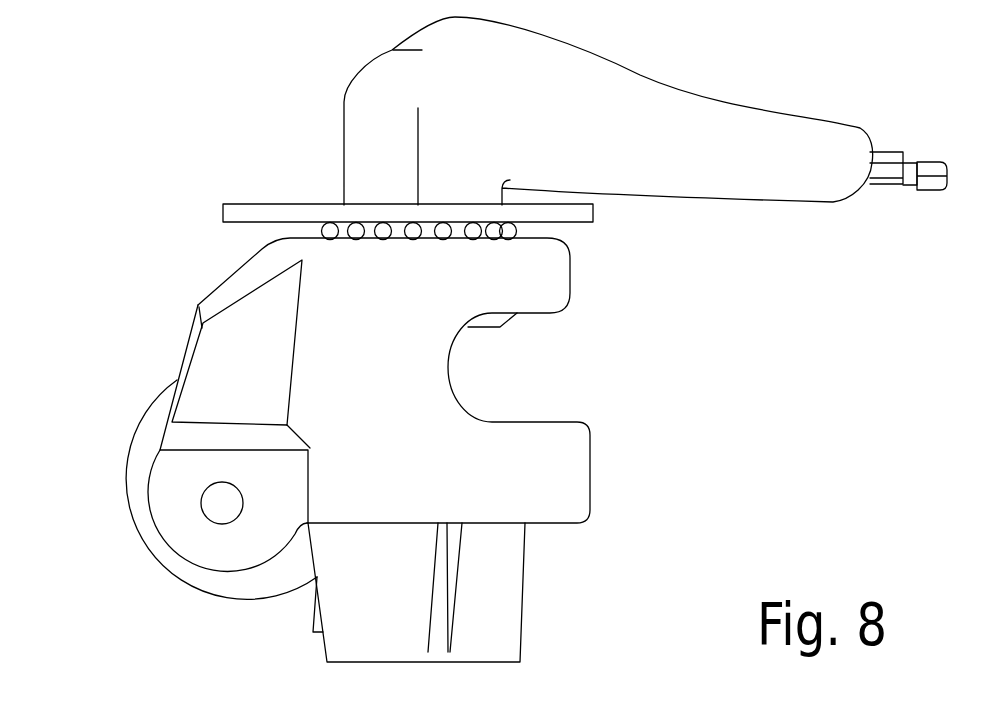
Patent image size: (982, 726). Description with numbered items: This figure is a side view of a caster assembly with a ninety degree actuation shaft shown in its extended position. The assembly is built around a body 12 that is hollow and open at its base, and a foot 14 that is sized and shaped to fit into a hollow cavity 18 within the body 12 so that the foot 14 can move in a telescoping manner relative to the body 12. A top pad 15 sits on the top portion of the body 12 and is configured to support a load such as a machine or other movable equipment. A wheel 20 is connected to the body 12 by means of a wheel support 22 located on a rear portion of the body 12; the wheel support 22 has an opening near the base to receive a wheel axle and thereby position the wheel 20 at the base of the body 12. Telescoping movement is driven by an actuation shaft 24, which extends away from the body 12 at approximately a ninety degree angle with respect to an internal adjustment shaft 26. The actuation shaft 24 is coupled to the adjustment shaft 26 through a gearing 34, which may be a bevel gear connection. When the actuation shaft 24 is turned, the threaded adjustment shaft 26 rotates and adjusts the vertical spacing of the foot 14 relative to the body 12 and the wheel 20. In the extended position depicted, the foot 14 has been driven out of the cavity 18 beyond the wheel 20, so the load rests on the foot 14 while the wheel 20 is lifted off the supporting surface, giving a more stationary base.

The body 12 is at (568, 467).
The foot 14 is at (490, 615).
The top pad 15 is at (255, 203).
The hollow cavity 18 is at (548, 375).
The wheel 20 is at (123, 485).
The wheel support 22 is at (192, 327).
The actuation shaft 24 is at (878, 173).
The adjustment shaft 26 is at (608, 102).
The gearing 34 is at (384, 130).